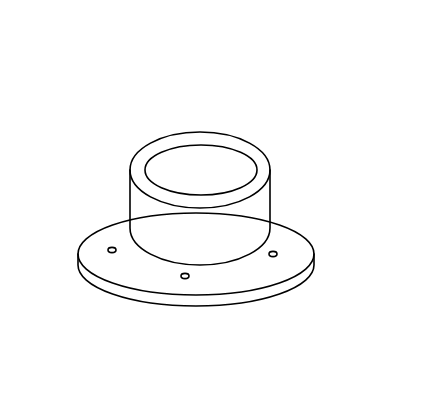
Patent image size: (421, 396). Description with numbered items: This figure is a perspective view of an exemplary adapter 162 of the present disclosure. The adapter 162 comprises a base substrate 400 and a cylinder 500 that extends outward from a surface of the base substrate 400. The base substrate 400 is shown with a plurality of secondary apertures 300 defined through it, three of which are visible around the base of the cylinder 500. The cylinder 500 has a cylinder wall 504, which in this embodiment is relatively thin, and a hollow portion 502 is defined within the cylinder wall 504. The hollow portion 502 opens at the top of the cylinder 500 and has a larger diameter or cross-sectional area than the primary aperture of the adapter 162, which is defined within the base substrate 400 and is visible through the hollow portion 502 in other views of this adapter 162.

The adapter 162 is at (177, 104).
The base substrate 400 is at (114, 237).
The secondary apertures 300 is at (188, 273).
The cylinder 500 is at (238, 143).
The hollow portion 502 is at (180, 163).
The cylinder wall 504 is at (257, 210).